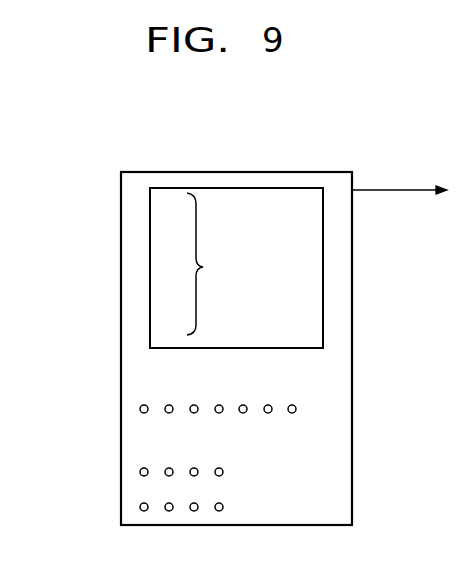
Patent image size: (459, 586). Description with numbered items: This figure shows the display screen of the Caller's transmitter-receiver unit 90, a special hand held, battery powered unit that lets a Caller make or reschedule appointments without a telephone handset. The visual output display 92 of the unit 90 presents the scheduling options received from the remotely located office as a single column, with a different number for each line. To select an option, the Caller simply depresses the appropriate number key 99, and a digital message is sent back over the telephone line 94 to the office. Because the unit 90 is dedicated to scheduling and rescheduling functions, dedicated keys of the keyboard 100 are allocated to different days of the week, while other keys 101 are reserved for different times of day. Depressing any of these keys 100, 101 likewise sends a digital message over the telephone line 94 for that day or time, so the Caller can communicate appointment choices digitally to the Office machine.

The transmitter-receiver unit 90 is at (160, 171).
The visual output display 92 is at (271, 197).
The telephone line 94 is at (378, 190).
The number key 99 is at (292, 404).
The dedicated keys of the keyboard 100 is at (140, 472).
The keys reserved for different times-of-day 101 is at (219, 511).